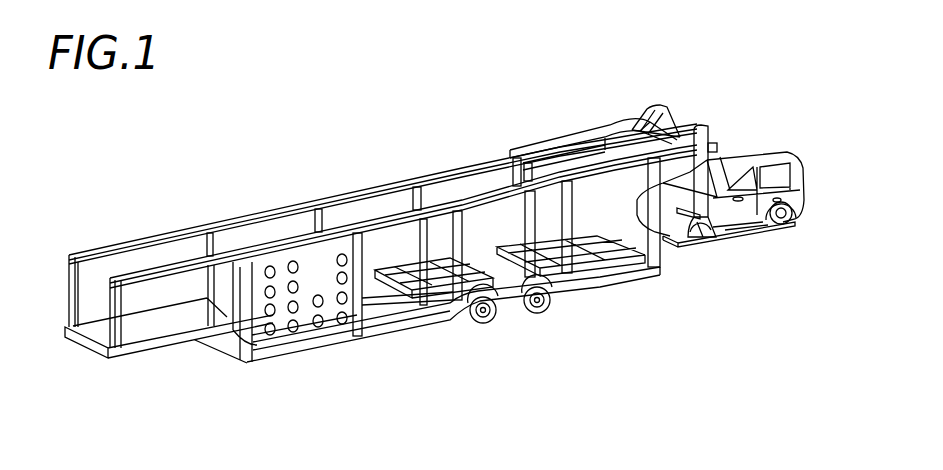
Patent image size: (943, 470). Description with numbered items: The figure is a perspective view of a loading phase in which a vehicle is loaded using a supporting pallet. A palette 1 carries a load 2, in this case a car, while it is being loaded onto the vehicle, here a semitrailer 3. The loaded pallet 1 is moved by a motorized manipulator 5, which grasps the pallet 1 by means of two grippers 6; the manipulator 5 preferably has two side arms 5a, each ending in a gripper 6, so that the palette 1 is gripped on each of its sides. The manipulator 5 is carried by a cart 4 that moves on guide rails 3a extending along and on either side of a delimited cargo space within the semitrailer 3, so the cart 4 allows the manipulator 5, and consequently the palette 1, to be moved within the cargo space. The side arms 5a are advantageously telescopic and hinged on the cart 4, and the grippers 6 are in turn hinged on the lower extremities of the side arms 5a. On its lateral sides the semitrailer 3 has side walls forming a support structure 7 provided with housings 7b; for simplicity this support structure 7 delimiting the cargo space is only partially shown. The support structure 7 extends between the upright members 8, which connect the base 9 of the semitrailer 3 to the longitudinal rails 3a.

The pallet 1 is at (435, 302).
The load 2 is at (763, 160).
The semitrailer 3 is at (510, 325).
The guide rails 3a is at (298, 236).
The cart 4 is at (548, 125).
The motorized manipulator 5 is at (733, 135).
The side arms 5a is at (716, 150).
The gripper 6 is at (716, 239).
The support structure 7 is at (307, 323).
The housings 7b is at (318, 326).
The upright members 8 is at (210, 299).
The base 9 is at (388, 337).